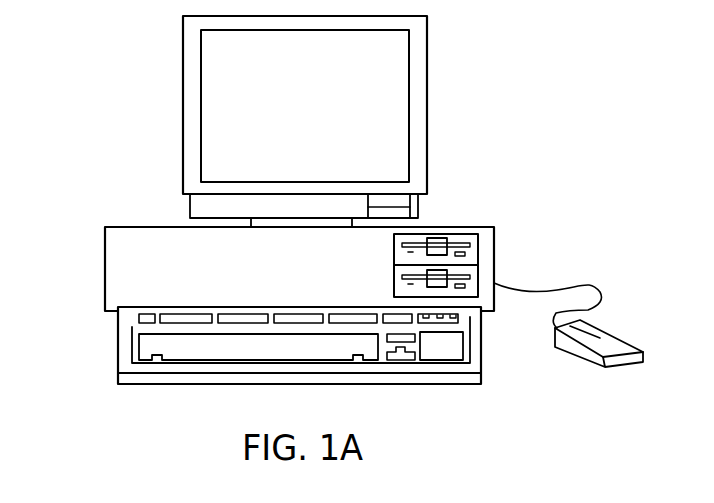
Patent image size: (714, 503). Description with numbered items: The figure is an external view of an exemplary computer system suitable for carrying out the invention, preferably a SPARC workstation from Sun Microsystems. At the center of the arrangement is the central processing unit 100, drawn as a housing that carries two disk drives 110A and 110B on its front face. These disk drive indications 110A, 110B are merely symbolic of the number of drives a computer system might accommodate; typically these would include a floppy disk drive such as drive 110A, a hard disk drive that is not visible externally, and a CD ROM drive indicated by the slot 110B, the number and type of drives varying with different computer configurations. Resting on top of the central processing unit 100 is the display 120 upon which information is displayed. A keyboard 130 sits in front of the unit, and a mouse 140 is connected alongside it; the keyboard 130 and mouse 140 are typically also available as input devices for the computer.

The central processing unit 100 is at (105, 266).
The disk drive 110A is at (394, 252).
The disk drive 110B is at (394, 290).
The display 120 is at (420, 93).
The keyboard 130 is at (127, 349).
The mouse 140 is at (612, 338).